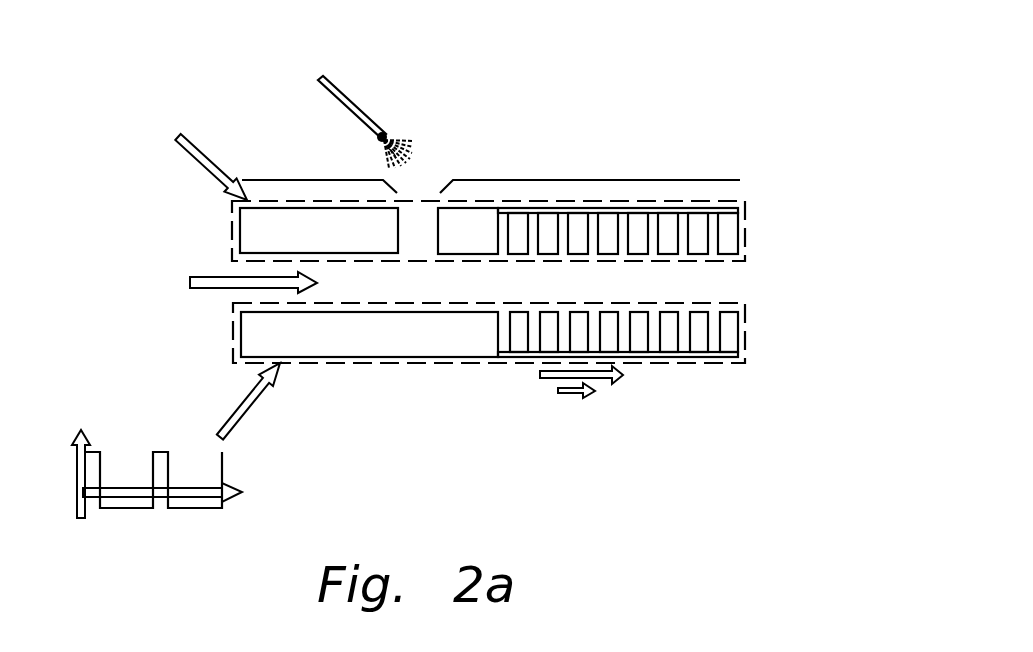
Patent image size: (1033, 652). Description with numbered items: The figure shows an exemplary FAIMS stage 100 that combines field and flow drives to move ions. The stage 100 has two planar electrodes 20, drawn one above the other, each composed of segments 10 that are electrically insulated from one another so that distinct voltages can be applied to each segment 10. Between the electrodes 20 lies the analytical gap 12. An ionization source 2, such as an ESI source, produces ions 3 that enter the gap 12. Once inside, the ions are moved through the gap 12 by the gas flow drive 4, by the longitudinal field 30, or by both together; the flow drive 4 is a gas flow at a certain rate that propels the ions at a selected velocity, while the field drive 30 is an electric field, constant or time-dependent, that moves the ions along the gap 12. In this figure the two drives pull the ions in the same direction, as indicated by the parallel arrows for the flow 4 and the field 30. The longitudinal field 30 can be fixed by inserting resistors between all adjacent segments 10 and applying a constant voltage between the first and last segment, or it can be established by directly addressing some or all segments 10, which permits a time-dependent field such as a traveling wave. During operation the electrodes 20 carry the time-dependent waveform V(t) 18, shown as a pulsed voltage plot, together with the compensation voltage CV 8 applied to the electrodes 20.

The FAIMS stage 100 is at (702, 96).
The ionization source 2 is at (331, 99).
The ions 3 is at (401, 138).
The gas flow drive 4 is at (205, 277).
The CV 8 is at (178, 137).
The segments 10 is at (301, 245).
The analytical gap 12 is at (657, 295).
The V(t) 18 is at (162, 452).
The planar electrodes 20 is at (230, 225).
The longitudinal field 30 is at (600, 382).